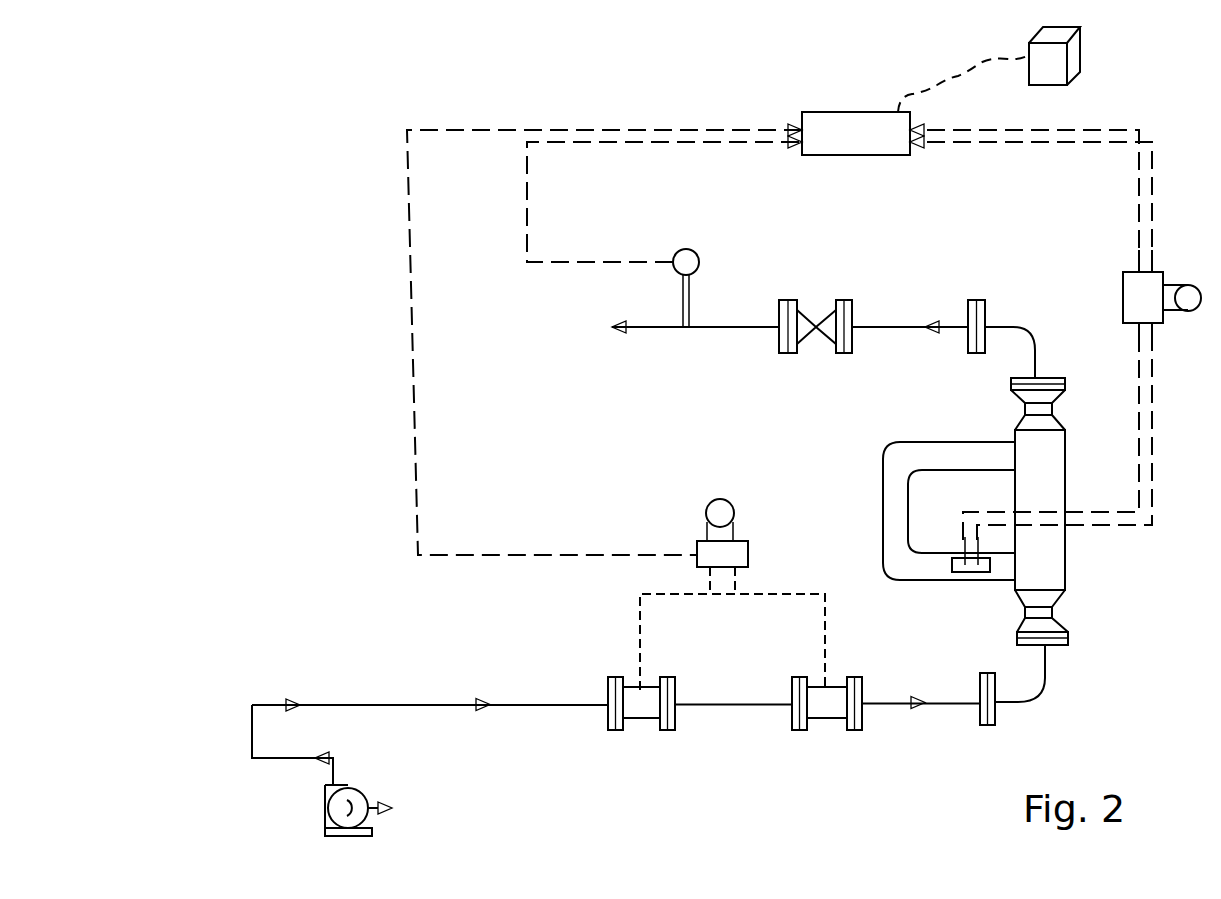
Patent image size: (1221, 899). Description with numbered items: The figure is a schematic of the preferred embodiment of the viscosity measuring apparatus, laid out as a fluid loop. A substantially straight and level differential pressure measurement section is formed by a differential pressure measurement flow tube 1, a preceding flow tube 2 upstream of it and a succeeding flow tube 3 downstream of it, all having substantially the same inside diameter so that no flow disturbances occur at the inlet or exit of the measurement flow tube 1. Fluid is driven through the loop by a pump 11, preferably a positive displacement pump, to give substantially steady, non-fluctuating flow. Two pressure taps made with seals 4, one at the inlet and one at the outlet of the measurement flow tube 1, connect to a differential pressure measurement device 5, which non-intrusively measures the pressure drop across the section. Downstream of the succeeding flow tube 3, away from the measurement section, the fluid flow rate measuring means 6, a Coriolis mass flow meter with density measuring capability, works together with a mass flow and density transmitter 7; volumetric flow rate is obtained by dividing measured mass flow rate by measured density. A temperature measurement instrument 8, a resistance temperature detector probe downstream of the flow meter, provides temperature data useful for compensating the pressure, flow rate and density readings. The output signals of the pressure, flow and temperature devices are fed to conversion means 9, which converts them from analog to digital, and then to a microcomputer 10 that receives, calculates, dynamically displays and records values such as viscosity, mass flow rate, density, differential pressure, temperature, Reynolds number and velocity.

The differential pressure measurement flow tube 1 is at (750, 703).
The preceding flow tube 2 is at (558, 706).
The succeeding flow tube 3 is at (955, 703).
The seals 4 is at (640, 685).
The differential pressure measurement device 5 is at (750, 552).
The fluid flow rate measuring means 6 is at (1065, 553).
The mass flow and density transmitter 7 is at (1165, 323).
The temperature measurement instrument 8 is at (699, 258).
The conversion means 9 is at (856, 112).
The microcomputer 10 is at (1080, 50).
The pump 11 is at (370, 826).